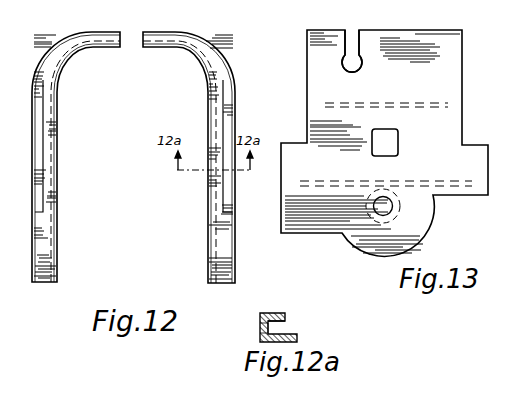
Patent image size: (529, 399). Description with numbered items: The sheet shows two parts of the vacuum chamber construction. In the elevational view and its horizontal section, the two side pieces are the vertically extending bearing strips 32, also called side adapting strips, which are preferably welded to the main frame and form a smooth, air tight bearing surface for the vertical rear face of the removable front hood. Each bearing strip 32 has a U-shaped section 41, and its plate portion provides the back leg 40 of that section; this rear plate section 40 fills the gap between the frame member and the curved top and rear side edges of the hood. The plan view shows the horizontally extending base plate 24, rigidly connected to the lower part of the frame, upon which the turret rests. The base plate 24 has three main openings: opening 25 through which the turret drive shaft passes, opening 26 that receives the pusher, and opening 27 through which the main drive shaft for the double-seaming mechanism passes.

In FIG. 12, the back leg 40 is at (233, 94).
In FIG. 12A, the back leg 40 is at (298, 338).
In FIG. 12, the bearing strip 32 is at (58, 247).
In FIG. 12A, the bearing strip 32 is at (259, 336).
In FIG. 12A, the U-shaped section 41 is at (286, 326).
In FIG. 13, the base plate 24 is at (454, 122).
In FIG. 13, the opening 25 is at (393, 212).
In FIG. 13, the opening 26 is at (399, 145).
In FIG. 13, the opening 27 is at (364, 65).